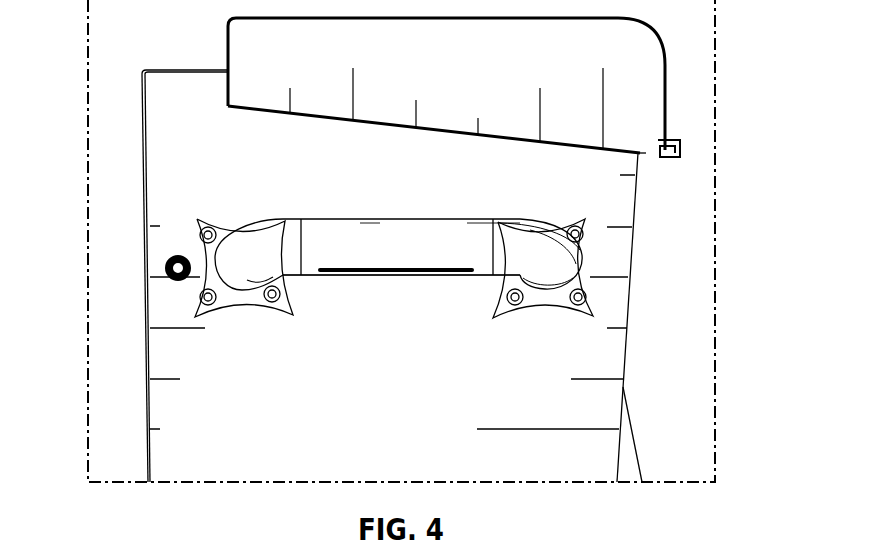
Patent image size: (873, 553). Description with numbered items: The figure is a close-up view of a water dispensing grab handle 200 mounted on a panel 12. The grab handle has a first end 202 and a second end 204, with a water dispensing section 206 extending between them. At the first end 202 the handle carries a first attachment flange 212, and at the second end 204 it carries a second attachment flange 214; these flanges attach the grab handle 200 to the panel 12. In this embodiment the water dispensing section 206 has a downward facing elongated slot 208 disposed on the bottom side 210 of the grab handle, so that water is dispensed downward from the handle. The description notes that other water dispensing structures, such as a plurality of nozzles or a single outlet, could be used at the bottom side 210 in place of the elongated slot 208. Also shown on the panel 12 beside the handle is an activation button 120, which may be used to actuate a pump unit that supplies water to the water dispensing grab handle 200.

The panel 12 is at (393, 409).
The activation button 120 is at (165, 270).
The water dispensing grab handle 200 is at (490, 259).
The first end 202 is at (266, 218).
The second end 204 is at (552, 268).
The water dispensing section 206 is at (390, 233).
The elongated slot 208 is at (385, 278).
The bottom side 210 is at (475, 278).
The first attachment flange 212 is at (247, 308).
The second attachment flange 214 is at (547, 310).